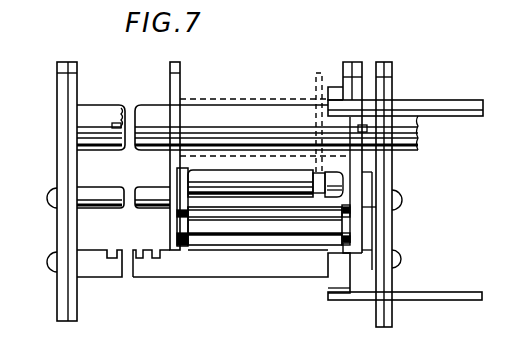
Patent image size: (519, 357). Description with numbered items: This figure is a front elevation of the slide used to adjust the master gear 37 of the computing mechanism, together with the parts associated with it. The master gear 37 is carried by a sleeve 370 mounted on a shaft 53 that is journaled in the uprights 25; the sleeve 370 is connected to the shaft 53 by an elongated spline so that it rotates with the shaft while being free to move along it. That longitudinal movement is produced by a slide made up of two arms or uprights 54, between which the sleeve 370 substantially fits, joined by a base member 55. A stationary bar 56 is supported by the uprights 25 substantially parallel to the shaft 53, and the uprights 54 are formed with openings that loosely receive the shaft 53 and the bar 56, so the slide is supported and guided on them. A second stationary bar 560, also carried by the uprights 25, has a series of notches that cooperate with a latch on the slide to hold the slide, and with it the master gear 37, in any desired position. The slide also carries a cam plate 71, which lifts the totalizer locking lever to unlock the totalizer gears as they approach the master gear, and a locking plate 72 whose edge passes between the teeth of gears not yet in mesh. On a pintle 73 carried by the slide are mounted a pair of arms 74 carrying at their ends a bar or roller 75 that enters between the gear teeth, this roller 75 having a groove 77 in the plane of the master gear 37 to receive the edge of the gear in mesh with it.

The uprights 25 is at (57, 313).
The master gear 37 is at (314, 73).
The shaft 53 is at (102, 113).
The arms or uprights 54 is at (173, 167).
The base member 55 is at (295, 256).
The stationary bar 56 is at (112, 209).
The cam plate 71 is at (466, 293).
The locking plate 72 is at (453, 110).
The pintle 73 is at (217, 238).
The arms 74 is at (183, 244).
The bar or roller 75 is at (268, 176).
The groove 77 is at (318, 193).
The sleeve 370 is at (230, 98).
The second stationary bar 560 is at (107, 268).